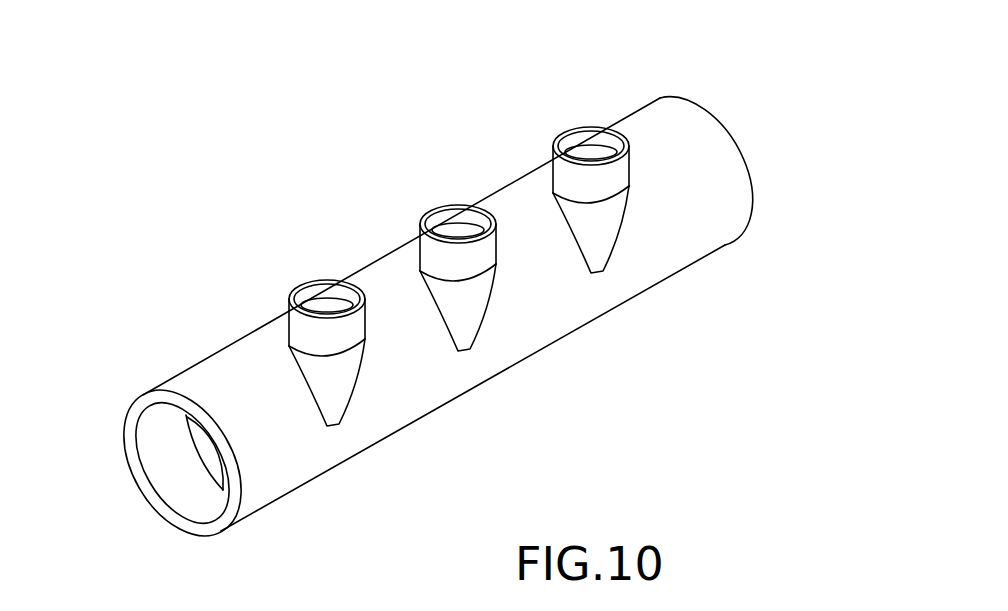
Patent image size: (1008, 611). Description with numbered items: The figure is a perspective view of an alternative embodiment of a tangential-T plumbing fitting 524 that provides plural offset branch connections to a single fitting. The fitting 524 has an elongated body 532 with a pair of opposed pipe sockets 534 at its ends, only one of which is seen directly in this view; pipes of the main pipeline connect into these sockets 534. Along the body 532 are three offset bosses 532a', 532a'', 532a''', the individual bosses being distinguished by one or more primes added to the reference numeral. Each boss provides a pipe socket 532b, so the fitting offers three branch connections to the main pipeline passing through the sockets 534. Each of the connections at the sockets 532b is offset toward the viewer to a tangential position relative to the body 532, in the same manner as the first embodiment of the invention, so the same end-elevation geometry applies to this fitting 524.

The tangential-T fitting 524 is at (185, 328).
The body 532 is at (692, 237).
The offset boss 532a' is at (374, 423).
The offset boss 532a'' is at (545, 341).
The offset boss 532a''' is at (673, 269).
The pipe socket 532b is at (587, 80).
The pipe socket 534 is at (181, 482).